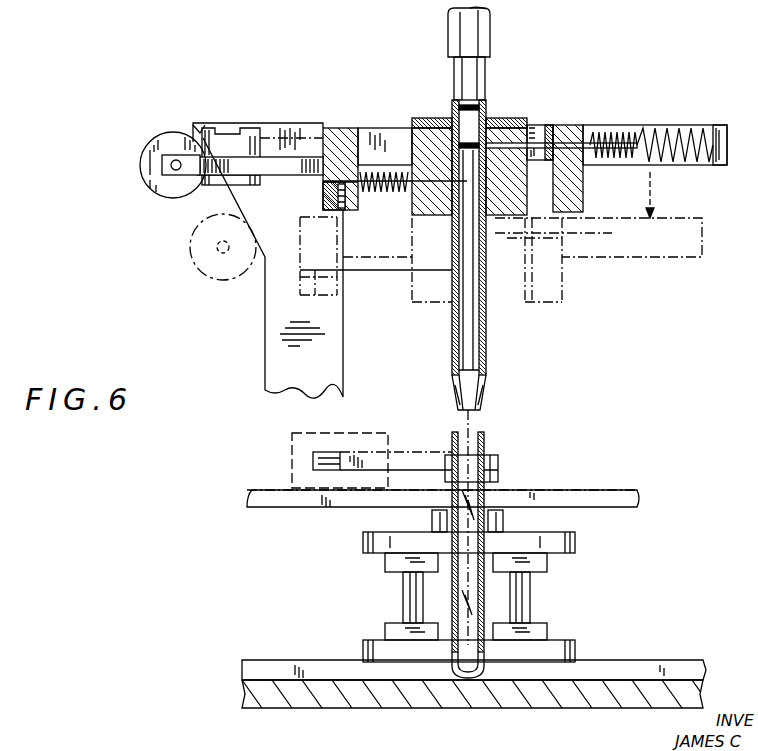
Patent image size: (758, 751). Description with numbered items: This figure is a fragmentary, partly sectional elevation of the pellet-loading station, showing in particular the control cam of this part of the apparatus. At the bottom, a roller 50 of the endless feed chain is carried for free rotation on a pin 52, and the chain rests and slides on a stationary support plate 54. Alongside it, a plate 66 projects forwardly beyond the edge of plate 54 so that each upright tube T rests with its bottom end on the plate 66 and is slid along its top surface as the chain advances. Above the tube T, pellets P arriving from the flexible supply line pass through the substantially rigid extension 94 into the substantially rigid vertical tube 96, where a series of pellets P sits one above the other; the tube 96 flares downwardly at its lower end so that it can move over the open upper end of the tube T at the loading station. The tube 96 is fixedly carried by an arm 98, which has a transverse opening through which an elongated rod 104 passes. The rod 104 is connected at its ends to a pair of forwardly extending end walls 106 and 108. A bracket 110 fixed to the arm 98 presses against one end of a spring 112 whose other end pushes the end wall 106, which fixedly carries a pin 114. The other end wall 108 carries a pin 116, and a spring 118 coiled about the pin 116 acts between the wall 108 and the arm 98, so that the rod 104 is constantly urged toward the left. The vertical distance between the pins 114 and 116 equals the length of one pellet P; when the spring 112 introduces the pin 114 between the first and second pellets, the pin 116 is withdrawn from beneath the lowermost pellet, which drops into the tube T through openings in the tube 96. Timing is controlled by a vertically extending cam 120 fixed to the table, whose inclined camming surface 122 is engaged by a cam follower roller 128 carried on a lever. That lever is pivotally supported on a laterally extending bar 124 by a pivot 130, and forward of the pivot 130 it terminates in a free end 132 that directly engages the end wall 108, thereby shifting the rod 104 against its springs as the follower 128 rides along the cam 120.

The rigid extension 94 is at (489, 40).
The rigid tube 96 is at (485, 363).
The arm 98 is at (438, 140).
The elongated rod 104 is at (393, 138).
The end wall 106 is at (582, 193).
The end wall 108 is at (345, 130).
The bracket 110 is at (642, 126).
The spring 112 is at (713, 153).
The pin 114 is at (545, 138).
The pin 116 is at (323, 190).
The spring 118 is at (403, 190).
The cam 120 is at (344, 343).
The camming surface 122 is at (233, 198).
The bar 124 is at (305, 140).
The cam follower roller 128 is at (163, 140).
The pivot 130 is at (222, 130).
The free end 132 is at (285, 165).
The pellet P is at (470, 113).
The tube T is at (485, 440).
The roller 50 is at (575, 538).
The pin 52 is at (530, 602).
The support plate 54 is at (676, 663).
The plate 66 is at (345, 695).